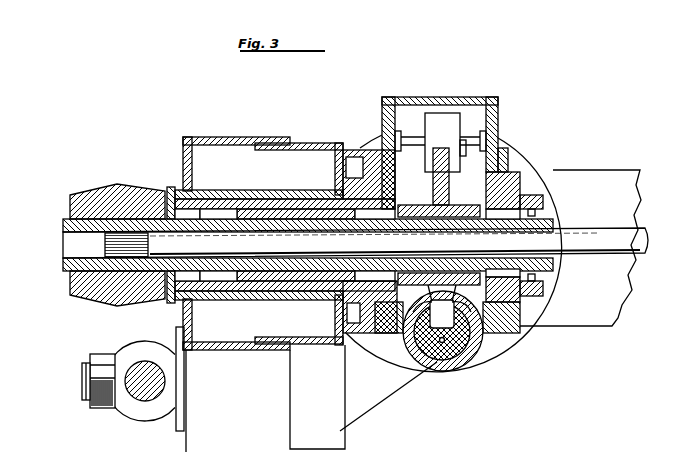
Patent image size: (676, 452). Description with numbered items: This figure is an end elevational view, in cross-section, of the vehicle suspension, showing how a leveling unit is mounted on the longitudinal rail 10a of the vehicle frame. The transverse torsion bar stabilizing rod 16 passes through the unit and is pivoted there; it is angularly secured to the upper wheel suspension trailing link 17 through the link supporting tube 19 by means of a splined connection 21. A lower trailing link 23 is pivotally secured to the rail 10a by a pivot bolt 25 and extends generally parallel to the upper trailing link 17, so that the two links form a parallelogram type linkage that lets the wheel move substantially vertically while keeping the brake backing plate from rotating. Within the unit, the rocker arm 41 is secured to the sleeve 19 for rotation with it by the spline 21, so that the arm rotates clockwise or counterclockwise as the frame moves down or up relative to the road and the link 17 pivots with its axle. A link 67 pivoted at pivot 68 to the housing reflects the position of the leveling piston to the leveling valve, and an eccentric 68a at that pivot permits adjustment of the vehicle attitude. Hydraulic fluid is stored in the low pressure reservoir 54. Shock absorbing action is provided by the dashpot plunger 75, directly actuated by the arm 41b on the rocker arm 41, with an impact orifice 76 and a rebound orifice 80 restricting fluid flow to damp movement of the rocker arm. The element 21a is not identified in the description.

The longitudinal rail 10a is at (188, 137).
The transverse torsion bar stabilizing rod 16 is at (608, 248).
The upper wheel suspension trailing link 17 is at (85, 196).
The link supporting tube 19 is at (63, 221).
The splined connection 21 is at (62, 243).
The nut 21a is at (462, 213).
The lower trailing link 23 is at (133, 352).
The pivot bolt 25 is at (100, 400).
The rocker arm 41 is at (436, 186).
The arm 41b is at (474, 352).
The low pressure reservoir 54 is at (512, 330).
The link 67 is at (438, 122).
The pivot 68 is at (472, 137).
The eccentric 68a is at (460, 146).
The dashpot plunger 75 is at (466, 370).
The impact orifice 76 is at (418, 342).
The rebound orifice 80 is at (440, 368).